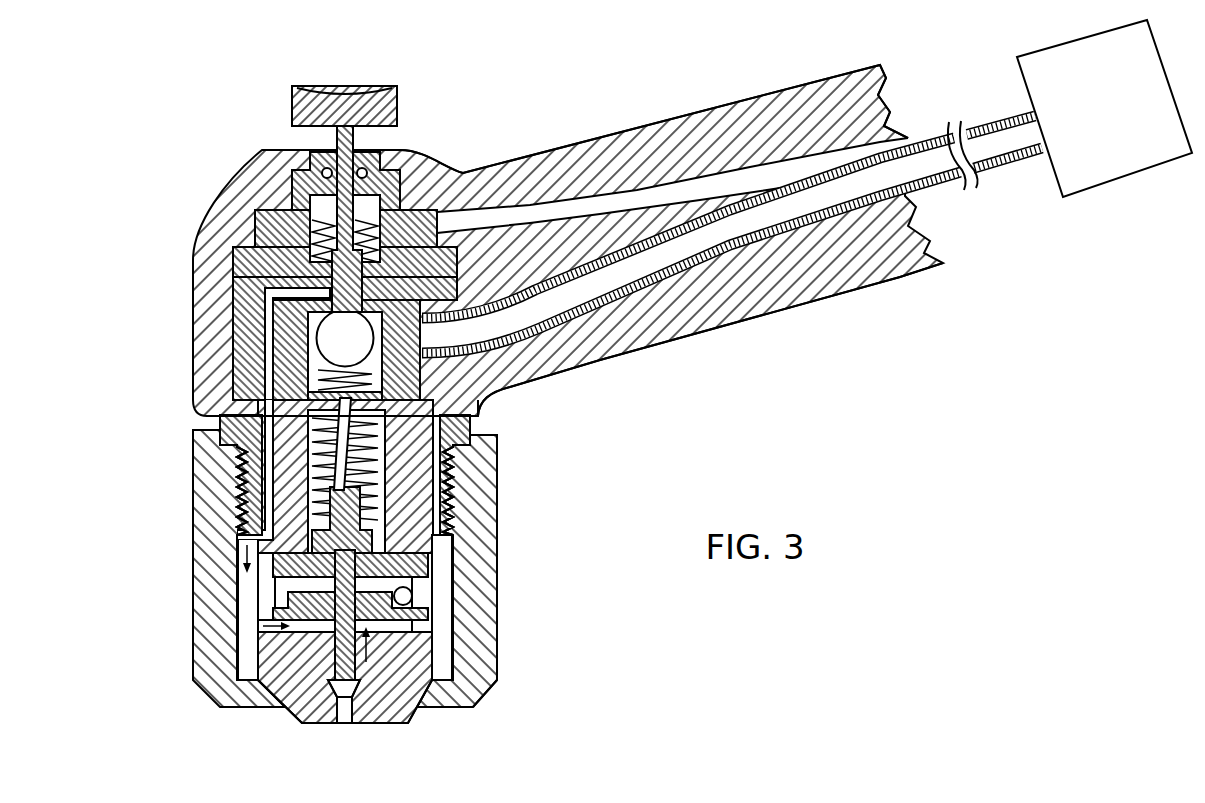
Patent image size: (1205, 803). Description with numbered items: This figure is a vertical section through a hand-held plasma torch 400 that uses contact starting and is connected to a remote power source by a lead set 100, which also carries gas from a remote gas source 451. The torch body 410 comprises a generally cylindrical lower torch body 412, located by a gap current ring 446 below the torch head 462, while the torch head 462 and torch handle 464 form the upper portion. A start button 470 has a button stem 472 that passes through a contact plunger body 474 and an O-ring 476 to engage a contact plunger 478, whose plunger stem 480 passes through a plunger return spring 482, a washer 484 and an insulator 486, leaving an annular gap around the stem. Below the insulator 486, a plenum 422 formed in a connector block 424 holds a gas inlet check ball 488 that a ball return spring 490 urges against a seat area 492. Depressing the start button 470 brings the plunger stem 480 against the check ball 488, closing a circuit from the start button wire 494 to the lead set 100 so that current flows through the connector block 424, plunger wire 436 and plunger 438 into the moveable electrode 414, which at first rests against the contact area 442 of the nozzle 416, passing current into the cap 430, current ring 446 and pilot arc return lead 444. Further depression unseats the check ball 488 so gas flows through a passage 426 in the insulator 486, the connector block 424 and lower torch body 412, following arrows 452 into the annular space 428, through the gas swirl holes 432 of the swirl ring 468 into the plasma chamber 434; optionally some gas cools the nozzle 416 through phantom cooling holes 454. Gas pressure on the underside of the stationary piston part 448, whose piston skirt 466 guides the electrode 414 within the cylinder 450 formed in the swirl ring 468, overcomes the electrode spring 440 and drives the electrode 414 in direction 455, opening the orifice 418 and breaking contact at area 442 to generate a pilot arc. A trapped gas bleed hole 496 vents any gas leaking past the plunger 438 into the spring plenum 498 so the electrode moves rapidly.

The lead set 100 is at (715, 256).
The hand-held plasma torch 400 is at (548, 58).
The torch body 410 is at (178, 484).
The lower torch body 412 is at (435, 512).
The moveable electrode 414 is at (318, 634).
The nozzle 416 is at (392, 717).
The orifice 418 is at (345, 722).
The plenum 422 is at (490, 412).
The connector block 424 is at (195, 372).
The passage 426 is at (235, 466).
The annular space 428 is at (447, 652).
The cap 430 is at (491, 684).
The gas swirl holes 432 is at (435, 627).
The plasma chamber 434 is at (262, 678).
The plunger wire 436 is at (300, 514).
The plunger 438 is at (245, 577).
The electrode spring 440 is at (268, 505).
The contact area 442 is at (322, 636).
The pilot arc return lead 444 is at (827, 230).
The gap current ring 446 is at (207, 417).
The piston part 448 is at (275, 585).
The cylinder 450 is at (422, 602).
The remote gas source 451 is at (1120, 121).
The arrows 452 is at (247, 642).
The cooling holes 454 is at (458, 705).
The direction 455 is at (375, 634).
The torch head 462 is at (263, 148).
The torch handle 464 is at (793, 86).
The piston skirt 466 is at (414, 592).
The swirl ring 468 is at (422, 566).
The start button 470 is at (346, 86).
The button stem 472 is at (356, 137).
The contact plunger body 474 is at (473, 172).
The O-ring 476 is at (398, 152).
The contact plunger 478 is at (300, 192).
The plunger stem 480 is at (300, 205).
The plunger return spring 482 is at (320, 237).
The washer 484 is at (273, 297).
The insulator 486 is at (305, 272).
The gas inlet check ball 488 is at (320, 352).
The ball return spring 490 is at (316, 340).
The seat area 492 is at (440, 380).
The start button wire 494 is at (650, 193).
The trapped gas bleed hole 496 is at (493, 420).
The spring plenum 498 is at (455, 485).